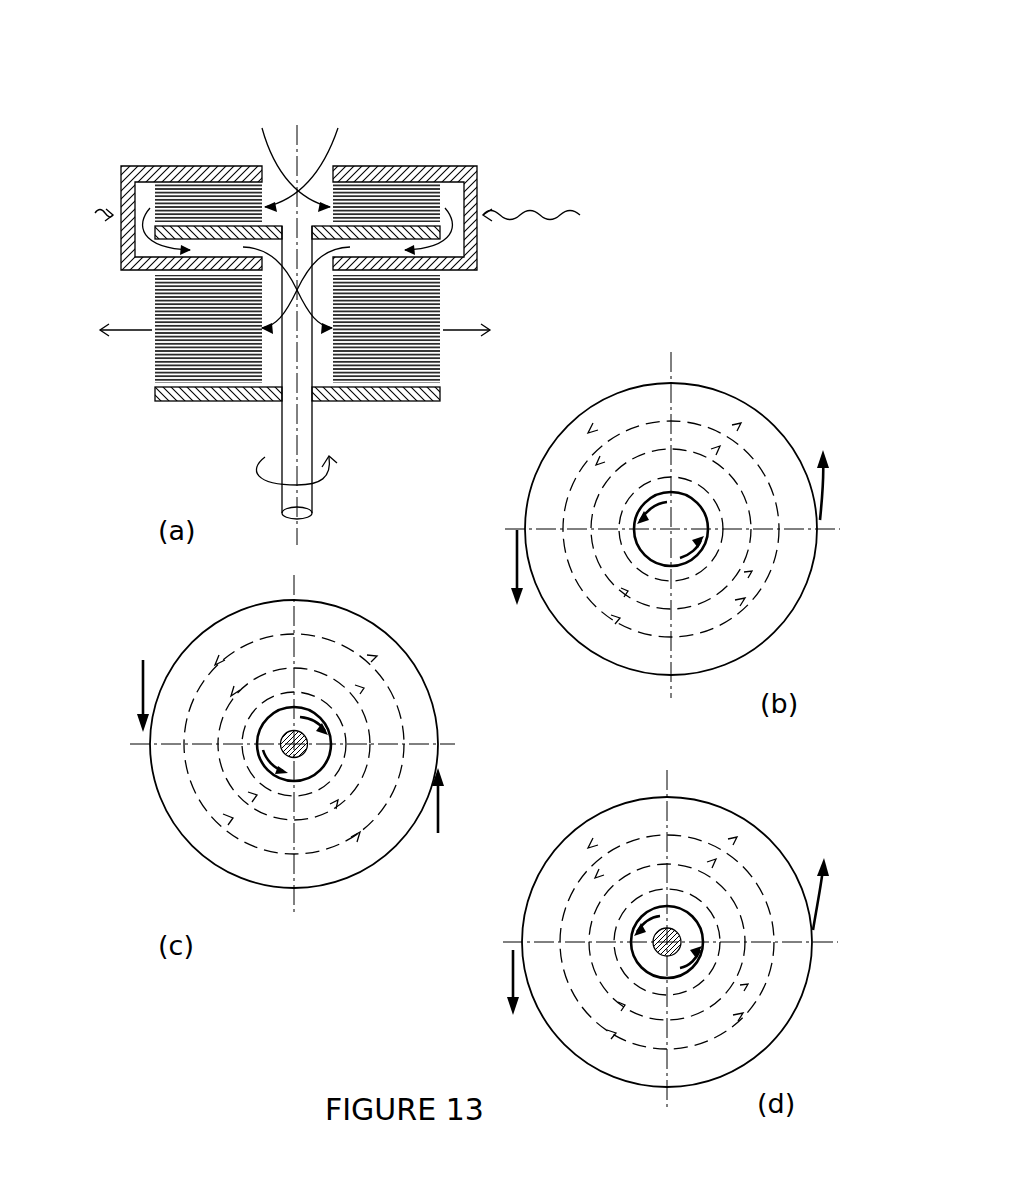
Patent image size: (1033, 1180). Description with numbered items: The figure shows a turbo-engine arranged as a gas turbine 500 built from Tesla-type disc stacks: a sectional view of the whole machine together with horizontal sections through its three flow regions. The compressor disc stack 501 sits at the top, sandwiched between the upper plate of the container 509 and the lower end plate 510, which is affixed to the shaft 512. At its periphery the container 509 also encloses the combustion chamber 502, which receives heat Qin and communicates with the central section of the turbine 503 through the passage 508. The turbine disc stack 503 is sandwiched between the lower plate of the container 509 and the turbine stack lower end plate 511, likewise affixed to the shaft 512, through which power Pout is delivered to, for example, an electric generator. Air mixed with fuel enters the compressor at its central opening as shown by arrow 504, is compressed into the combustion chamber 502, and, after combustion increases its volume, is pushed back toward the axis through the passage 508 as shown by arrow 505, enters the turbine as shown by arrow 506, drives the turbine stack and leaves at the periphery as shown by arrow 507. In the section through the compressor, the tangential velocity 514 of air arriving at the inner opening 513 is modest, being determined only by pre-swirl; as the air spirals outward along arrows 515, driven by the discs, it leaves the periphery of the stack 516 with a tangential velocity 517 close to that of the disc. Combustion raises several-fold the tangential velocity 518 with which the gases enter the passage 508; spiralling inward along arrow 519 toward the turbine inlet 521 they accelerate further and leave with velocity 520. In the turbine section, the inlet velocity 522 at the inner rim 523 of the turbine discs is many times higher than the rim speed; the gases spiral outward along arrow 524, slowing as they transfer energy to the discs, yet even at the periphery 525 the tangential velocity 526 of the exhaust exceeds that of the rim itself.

The gas turbine 500 is at (265, 62).
The Tesla-type compressor 501 is at (383, 202).
The combustion chamber 502 is at (452, 192).
The turbine 503 is at (406, 364).
The arrow 504 is at (265, 143).
The centripetal flow 505 is at (452, 238).
The arrow 506 is at (297, 340).
The arrow 507 is at (466, 330).
The passage 508 is at (443, 272).
The container 509 is at (180, 173).
The lower end plate 510 is at (228, 232).
The turbine stack lower end plate 511 is at (190, 393).
The shaft 512 is at (385, 438).
The inner opening 513 is at (662, 493).
The tangential velocity 514 is at (662, 493).
The arrows 515 is at (753, 485).
The periphery of the stack 516 is at (747, 653).
The tangential velocity 517 is at (518, 563).
The tangential velocity 518 is at (438, 807).
The arrow 519 is at (237, 656).
The velocity 520 is at (320, 727).
The turbine inlet 521 is at (276, 753).
The inlet velocity 522 is at (682, 968).
The inner rim 523 is at (652, 910).
The arrow 524 is at (605, 1020).
The periphery 525 is at (858, 820).
The tangential velocity 526 is at (515, 973).
The heat input Qin is at (560, 214).
The power output Pout is at (328, 482).